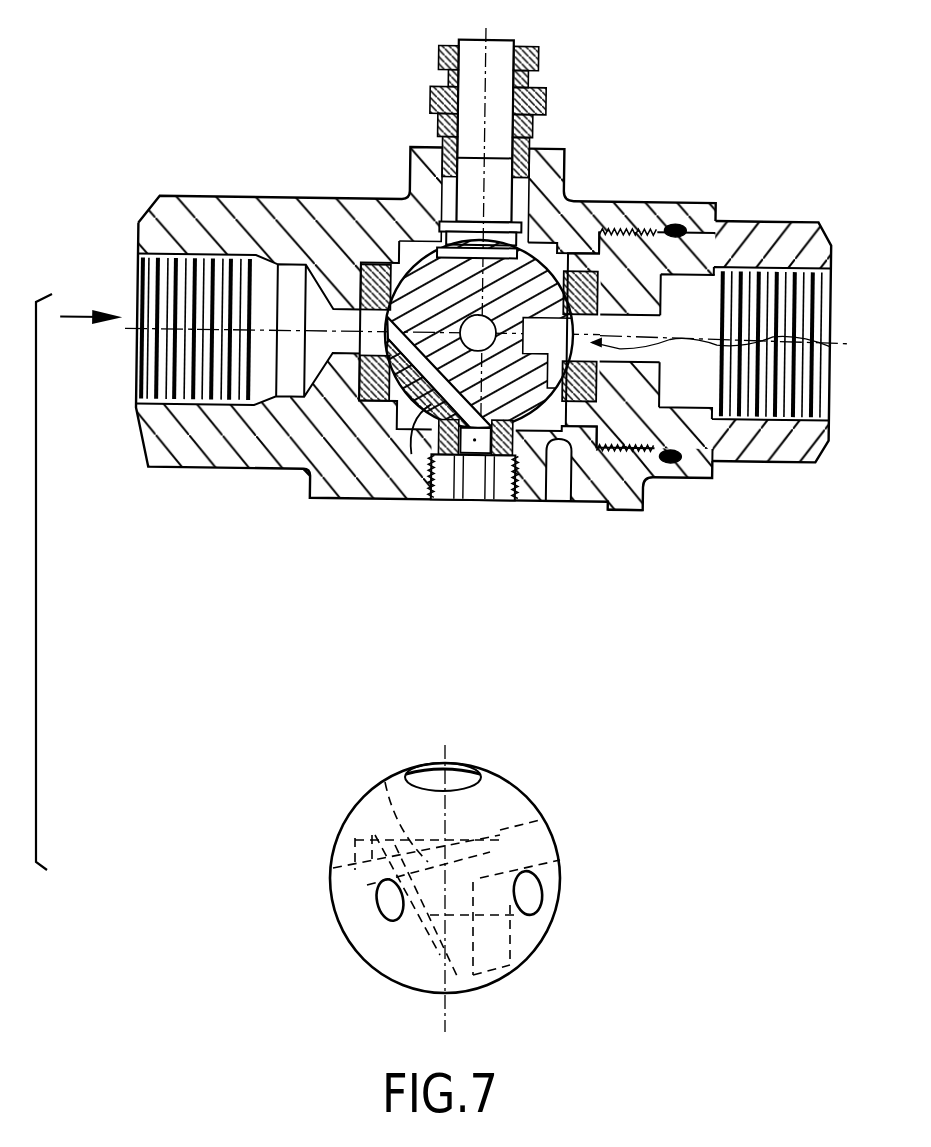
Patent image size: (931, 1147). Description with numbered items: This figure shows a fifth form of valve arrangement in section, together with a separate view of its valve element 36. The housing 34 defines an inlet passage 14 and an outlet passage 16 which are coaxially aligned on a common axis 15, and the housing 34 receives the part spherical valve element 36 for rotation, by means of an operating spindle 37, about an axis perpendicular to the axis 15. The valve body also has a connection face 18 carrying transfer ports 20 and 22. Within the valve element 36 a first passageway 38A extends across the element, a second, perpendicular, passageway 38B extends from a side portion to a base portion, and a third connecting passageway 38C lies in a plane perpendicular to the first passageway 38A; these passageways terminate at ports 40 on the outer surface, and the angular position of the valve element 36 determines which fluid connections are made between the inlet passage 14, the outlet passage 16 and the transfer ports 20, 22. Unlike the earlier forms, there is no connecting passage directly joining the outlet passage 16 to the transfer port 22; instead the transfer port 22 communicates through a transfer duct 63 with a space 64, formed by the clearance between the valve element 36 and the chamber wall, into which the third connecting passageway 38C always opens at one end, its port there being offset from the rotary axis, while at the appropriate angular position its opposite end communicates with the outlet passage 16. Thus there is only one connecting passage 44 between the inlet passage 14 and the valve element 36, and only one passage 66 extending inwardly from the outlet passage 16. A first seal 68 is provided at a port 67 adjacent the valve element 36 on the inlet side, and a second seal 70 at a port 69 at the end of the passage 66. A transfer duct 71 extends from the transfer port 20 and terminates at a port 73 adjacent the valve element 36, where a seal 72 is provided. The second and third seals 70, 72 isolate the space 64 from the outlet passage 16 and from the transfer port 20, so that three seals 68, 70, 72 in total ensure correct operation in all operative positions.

The inlet passage 14 is at (140, 292).
The axis 15 is at (153, 337).
The outlet passage 16 is at (820, 298).
The connection face 18 is at (646, 503).
The transfer port 20 is at (477, 500).
The transfer port 22 is at (567, 490).
The housing 34 is at (318, 200).
The valve element 36 is at (553, 240).
The operating spindle 37 is at (490, 50).
The first passageway 38A is at (392, 790).
The second passageway 38B is at (408, 470).
The third connecting passageway 38C is at (537, 478).
The ports 40 is at (545, 880).
The connecting passage 44 is at (390, 372).
The transfer duct 63 is at (575, 492).
The space 64 is at (600, 455).
The passage 66 is at (648, 262).
The port 67 is at (352, 335).
The first seal 68 is at (388, 467).
The port 69 is at (729, 350).
The second seal 70 is at (618, 262).
The transfer duct 71 is at (465, 473).
The seal 72 is at (445, 475).
The port 73 is at (440, 455).